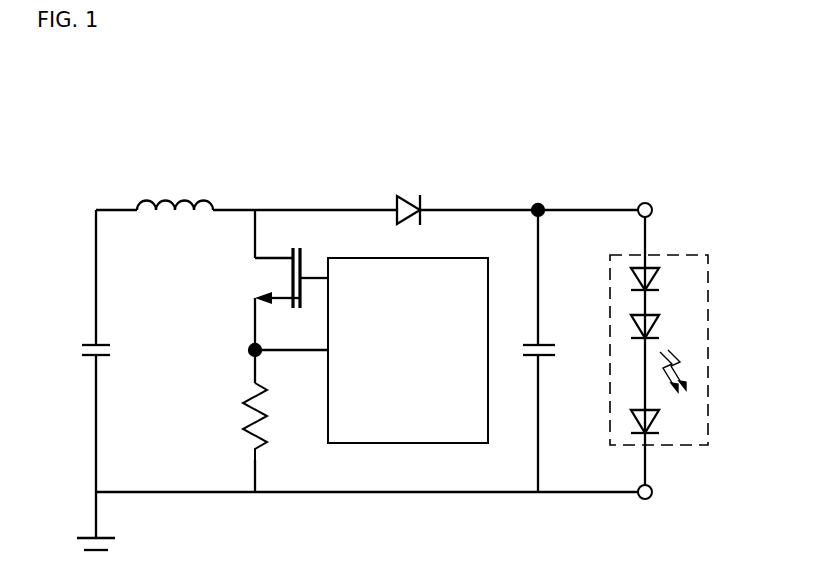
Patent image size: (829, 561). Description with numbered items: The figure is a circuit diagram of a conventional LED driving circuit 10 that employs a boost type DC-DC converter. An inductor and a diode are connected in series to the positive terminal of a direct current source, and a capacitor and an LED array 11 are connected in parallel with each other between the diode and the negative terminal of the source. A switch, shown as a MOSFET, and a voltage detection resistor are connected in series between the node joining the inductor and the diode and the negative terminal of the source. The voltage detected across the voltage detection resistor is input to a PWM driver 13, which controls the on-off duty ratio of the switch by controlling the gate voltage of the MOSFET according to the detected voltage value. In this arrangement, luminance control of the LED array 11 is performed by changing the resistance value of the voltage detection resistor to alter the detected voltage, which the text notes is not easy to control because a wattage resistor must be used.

The LED driving circuit 10 is at (570, 142).
The LED array 11 is at (708, 280).
The PWM driver 13 is at (413, 443).